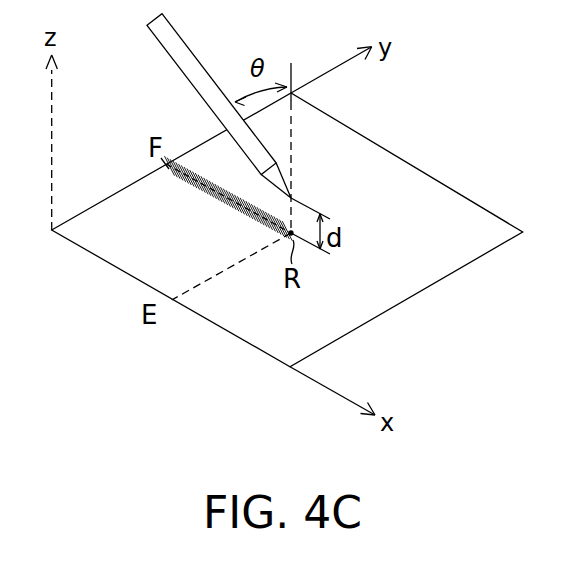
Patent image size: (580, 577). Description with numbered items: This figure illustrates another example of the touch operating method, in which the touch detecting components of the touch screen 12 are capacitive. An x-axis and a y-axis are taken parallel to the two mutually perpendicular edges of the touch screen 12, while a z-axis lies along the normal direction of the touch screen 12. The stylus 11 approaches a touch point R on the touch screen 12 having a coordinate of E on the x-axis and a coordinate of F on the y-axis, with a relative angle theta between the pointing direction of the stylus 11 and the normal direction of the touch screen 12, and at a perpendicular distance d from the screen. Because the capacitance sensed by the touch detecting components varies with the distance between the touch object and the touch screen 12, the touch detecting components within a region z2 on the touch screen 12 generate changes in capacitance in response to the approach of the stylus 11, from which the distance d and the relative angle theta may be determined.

The stylus 11 is at (165, 40).
The touch screen 12 is at (465, 268).
The region z2 is at (193, 183).